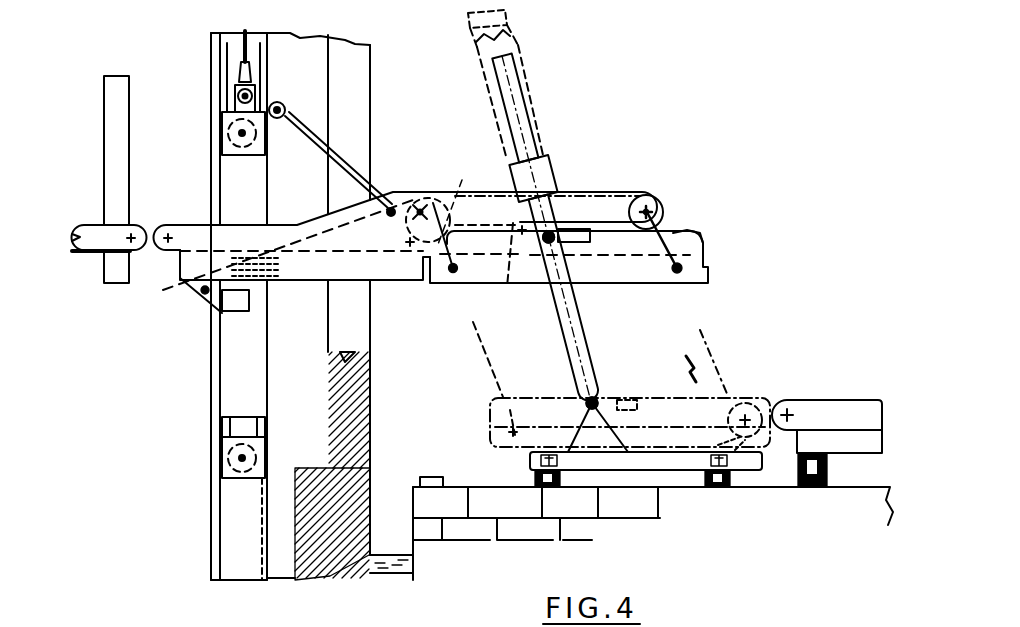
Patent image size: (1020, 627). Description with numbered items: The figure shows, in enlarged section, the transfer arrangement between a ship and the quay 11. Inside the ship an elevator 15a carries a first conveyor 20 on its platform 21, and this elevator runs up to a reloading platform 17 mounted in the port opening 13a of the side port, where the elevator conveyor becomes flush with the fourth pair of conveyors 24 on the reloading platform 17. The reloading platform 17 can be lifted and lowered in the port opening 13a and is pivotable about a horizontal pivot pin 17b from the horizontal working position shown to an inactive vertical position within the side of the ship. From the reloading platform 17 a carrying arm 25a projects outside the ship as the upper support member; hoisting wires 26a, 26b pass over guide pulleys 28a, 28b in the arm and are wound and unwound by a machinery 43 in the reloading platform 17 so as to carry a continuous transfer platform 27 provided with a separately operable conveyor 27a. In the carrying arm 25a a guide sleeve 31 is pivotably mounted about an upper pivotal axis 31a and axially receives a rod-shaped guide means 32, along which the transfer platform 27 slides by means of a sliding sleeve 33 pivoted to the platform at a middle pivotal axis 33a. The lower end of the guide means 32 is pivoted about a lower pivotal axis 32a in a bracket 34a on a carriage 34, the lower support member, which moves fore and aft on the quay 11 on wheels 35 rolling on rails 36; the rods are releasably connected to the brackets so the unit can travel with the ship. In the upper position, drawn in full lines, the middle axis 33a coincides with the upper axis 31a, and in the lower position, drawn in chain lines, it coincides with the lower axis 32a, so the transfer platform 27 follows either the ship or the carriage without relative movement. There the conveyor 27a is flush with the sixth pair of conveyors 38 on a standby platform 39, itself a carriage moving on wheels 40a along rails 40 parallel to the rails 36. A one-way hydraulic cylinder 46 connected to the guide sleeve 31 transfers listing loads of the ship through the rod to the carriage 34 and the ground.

The quay 11 is at (856, 490).
The port opening 13a is at (361, 110).
The elevator 15a is at (113, 138).
The reloading platform 17 is at (300, 270).
The pivot pin 17b is at (202, 295).
The first conveyor 20 is at (85, 226).
The platform 21 is at (92, 254).
The fourth pair of conveyors 24 is at (185, 223).
The carrying arm 25a is at (595, 209).
The hoisting wire 26a is at (456, 197).
The hoisting wire 26b is at (673, 245).
The transfer platform 27 is at (651, 270).
The conveyor 27a is at (706, 240).
The guide pulley 28a is at (409, 200).
The guide pulley 28b is at (668, 206).
The guide sleeve 31 is at (540, 160).
The upper pivotal axis 31a is at (550, 230).
The guide means 32 is at (577, 326).
The lower pivotal axis 32a is at (588, 403).
The sliding sleeve 33 is at (510, 262).
The middle pivotal axis 33a is at (594, 280).
The carriage 34 is at (622, 465).
The bracket 34a is at (593, 441).
The wheels 35 is at (535, 477).
The rails 36 is at (538, 487).
The sixth pair of conveyors 38 is at (810, 410).
The standby platform 39 is at (847, 444).
The rails 40 is at (801, 489).
The wheels 40a is at (815, 453).
The machinery 43 is at (195, 282).
The hydraulic cylinder 46 is at (512, 47).